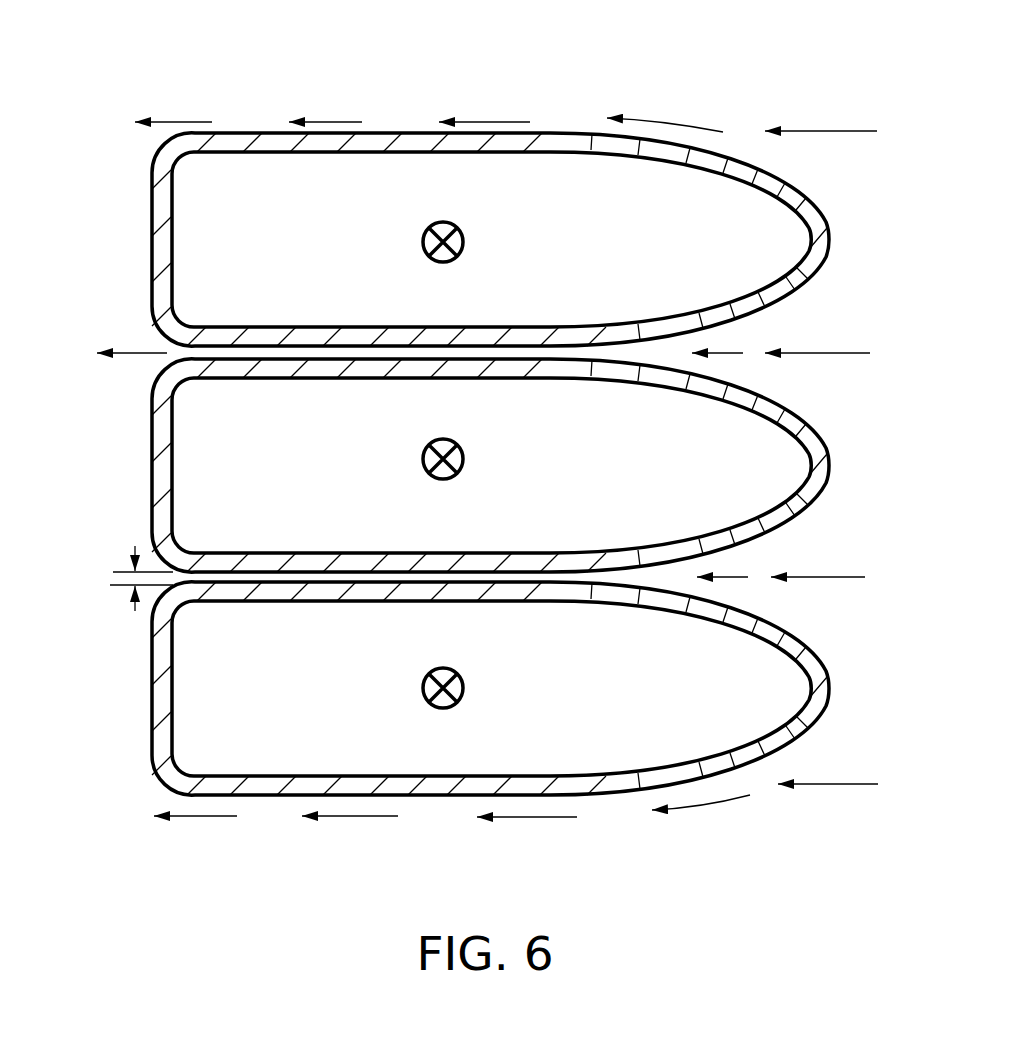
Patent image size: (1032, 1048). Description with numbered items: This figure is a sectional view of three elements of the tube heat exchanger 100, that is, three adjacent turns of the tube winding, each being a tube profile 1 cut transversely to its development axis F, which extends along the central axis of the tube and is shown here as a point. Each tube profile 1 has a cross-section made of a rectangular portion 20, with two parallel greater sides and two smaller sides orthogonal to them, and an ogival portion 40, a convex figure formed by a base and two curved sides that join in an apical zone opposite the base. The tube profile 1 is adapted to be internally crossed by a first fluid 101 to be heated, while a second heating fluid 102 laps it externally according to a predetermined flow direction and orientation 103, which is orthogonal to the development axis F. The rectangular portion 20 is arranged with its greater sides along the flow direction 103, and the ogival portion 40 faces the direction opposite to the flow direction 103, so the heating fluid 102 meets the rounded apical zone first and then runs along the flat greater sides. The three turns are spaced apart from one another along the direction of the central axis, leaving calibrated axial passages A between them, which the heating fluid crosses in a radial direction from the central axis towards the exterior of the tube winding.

The tube profile 1 is at (472, 405).
The rectangular portion 20 is at (281, 132).
The ogival portion 40 is at (733, 152).
The tube heat exchanger 100 is at (472, 415).
The first fluid 101 is at (559, 455).
The second heating fluid 102 is at (851, 234).
The predetermined flow direction and orientation 103 is at (826, 131).
The development axis F is at (463, 237).
The calibrated axial passages A is at (121, 585).